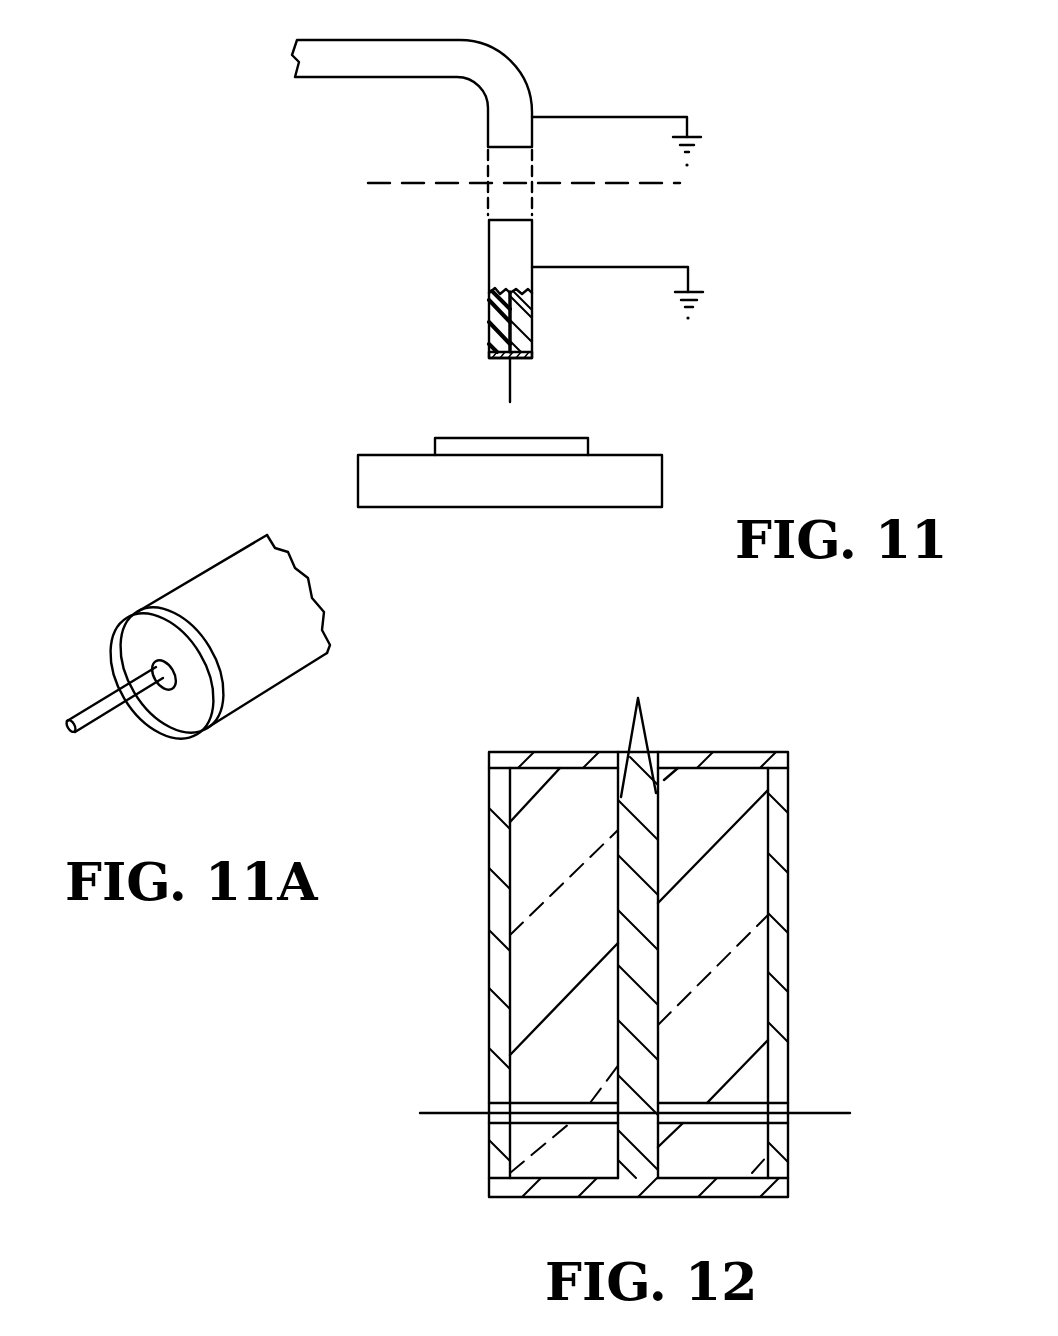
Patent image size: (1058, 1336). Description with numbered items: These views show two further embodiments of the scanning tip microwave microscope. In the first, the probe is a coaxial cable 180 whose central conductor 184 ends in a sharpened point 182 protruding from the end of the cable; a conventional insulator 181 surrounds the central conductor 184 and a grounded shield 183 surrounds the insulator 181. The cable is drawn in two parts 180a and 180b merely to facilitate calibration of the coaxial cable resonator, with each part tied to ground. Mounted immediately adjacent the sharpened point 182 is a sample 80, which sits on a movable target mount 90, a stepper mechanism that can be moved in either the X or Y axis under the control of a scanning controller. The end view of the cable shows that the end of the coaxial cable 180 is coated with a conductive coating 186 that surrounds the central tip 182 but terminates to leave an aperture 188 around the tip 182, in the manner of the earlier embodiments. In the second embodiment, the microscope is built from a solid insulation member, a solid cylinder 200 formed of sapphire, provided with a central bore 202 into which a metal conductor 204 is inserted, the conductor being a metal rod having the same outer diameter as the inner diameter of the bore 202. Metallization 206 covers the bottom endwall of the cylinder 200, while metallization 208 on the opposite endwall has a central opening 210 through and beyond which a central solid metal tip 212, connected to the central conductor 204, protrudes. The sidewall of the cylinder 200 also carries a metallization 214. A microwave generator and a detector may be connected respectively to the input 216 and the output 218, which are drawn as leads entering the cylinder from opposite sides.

In FIG. 11, the sample 80 is at (588, 447).
In FIG. 11, the movable target mount 90 is at (665, 476).
In FIG. 11, the coaxial cable 180 is at (402, 226).
In FIG. 11A, the coaxial cable 180 is at (178, 554).
In FIG. 11, the first part of coaxial cable 180a is at (522, 66).
In FIG. 11, the second part of coaxial cable 180b is at (532, 245).
In FIG. 11, the insulator 181 is at (520, 327).
In FIG. 11, the sharpened point 182 is at (512, 388).
In FIG. 11A, the sharpened point 182 is at (94, 733).
In FIG. 11, the grounded shield 183 is at (490, 318).
In FIG. 11, the central conductor 184 is at (528, 315).
In FIG. 11, the conductive coating 186 is at (500, 362).
In FIG. 11A, the conductive coating 186 is at (176, 718).
In FIG. 11A, the aperture 188 is at (116, 628).
In FIG. 12, the solid cylinder 200 is at (748, 932).
In FIG. 12, the central bore 202 is at (658, 836).
In FIG. 12, the metal conductor 204 is at (640, 975).
In FIG. 12, the metallization on bottom endwall 206 is at (540, 1197).
In FIG. 12, the metallization on opposite endwall 208 is at (735, 752).
In FIG. 12, the central opening 210 is at (618, 752).
In FIG. 12, the central solid metal tip 212 is at (642, 713).
In FIG. 12, the sidewall metallization 214 is at (790, 880).
In FIG. 12, the input 216 is at (445, 1112).
In FIG. 12, the output 218 is at (808, 1108).